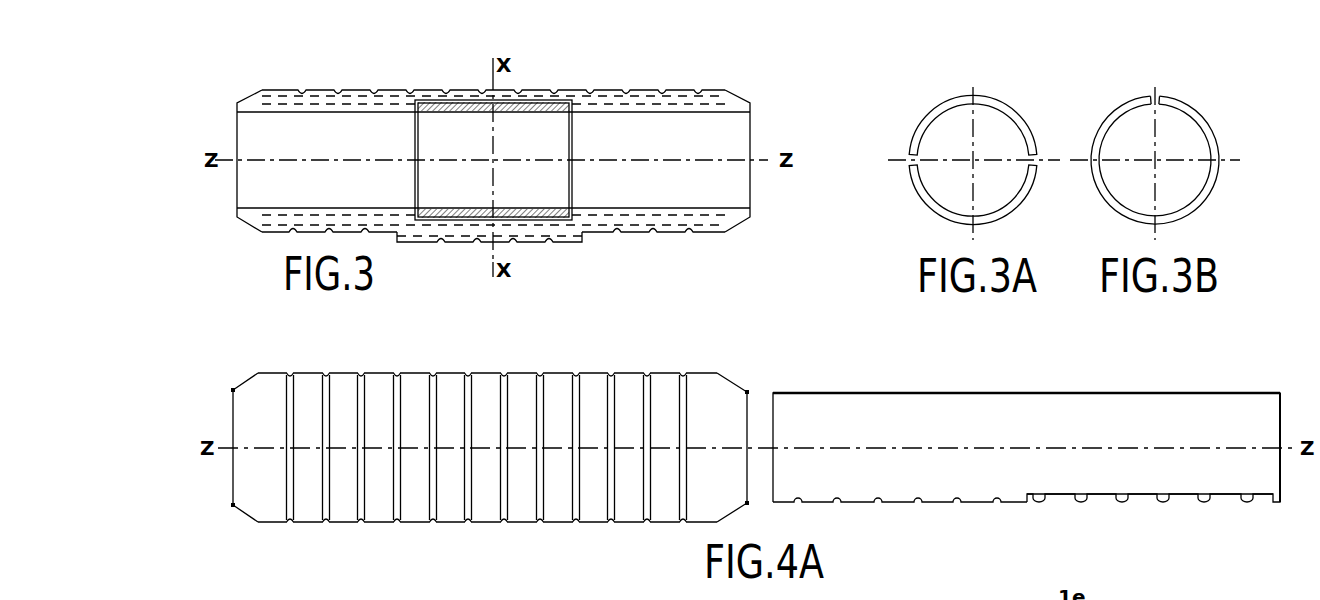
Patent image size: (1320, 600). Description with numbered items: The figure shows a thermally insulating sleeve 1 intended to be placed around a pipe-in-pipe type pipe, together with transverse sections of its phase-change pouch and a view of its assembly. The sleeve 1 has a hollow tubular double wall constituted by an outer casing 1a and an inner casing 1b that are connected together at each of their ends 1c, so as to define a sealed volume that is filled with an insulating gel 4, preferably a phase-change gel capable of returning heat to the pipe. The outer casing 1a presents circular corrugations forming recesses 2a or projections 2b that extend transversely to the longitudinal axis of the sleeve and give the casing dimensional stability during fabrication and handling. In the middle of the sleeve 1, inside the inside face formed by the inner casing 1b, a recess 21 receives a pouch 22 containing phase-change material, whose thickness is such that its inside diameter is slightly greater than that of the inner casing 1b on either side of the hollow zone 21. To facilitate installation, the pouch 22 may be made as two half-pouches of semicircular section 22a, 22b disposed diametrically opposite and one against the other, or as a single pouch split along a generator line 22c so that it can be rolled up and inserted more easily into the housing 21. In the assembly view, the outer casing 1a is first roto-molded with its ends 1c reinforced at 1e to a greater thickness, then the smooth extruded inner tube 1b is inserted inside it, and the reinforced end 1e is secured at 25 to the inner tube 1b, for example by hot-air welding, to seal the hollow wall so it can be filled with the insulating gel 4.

In FIG. 3, the thermally insulating sleeve 1 is at (207, 95).
In FIG. 4A, the thermally insulating sleeve 1 is at (226, 360).
In FIG. 3, the outer casing 1a is at (710, 90).
In FIG. 4A, the outer casing 1a is at (592, 373).
In FIG. 3, the inner casing 1b is at (727, 204).
In FIG. 4A, the inner casing 1b is at (1152, 393).
In FIG. 3, the ends 1c is at (237, 212).
In FIG. 4A, the reinforced end 1e is at (233, 505).
In FIG. 4A, the recesses 2a is at (918, 502).
In FIG. 4A, the projections 2b is at (1125, 496).
In FIG. 3, the insulating gel 4 is at (673, 101).
In FIG. 3, the recess 21 is at (410, 107).
In FIG. 3, the pouch 22 is at (546, 110).
In FIG. 3A, the pouch 22 is at (921, 101).
In FIG. 3B, the pouch 22 is at (1216, 107).
In FIG. 3A, the half-pouch of semicircular section 22a is at (1012, 108).
In FIG. 3A, the half-pouch of semicircular section 22b is at (1027, 203).
In FIG. 3B, the generator line 22c is at (1155, 97).
In FIG. 4A, the securing location 25 is at (1146, 596).